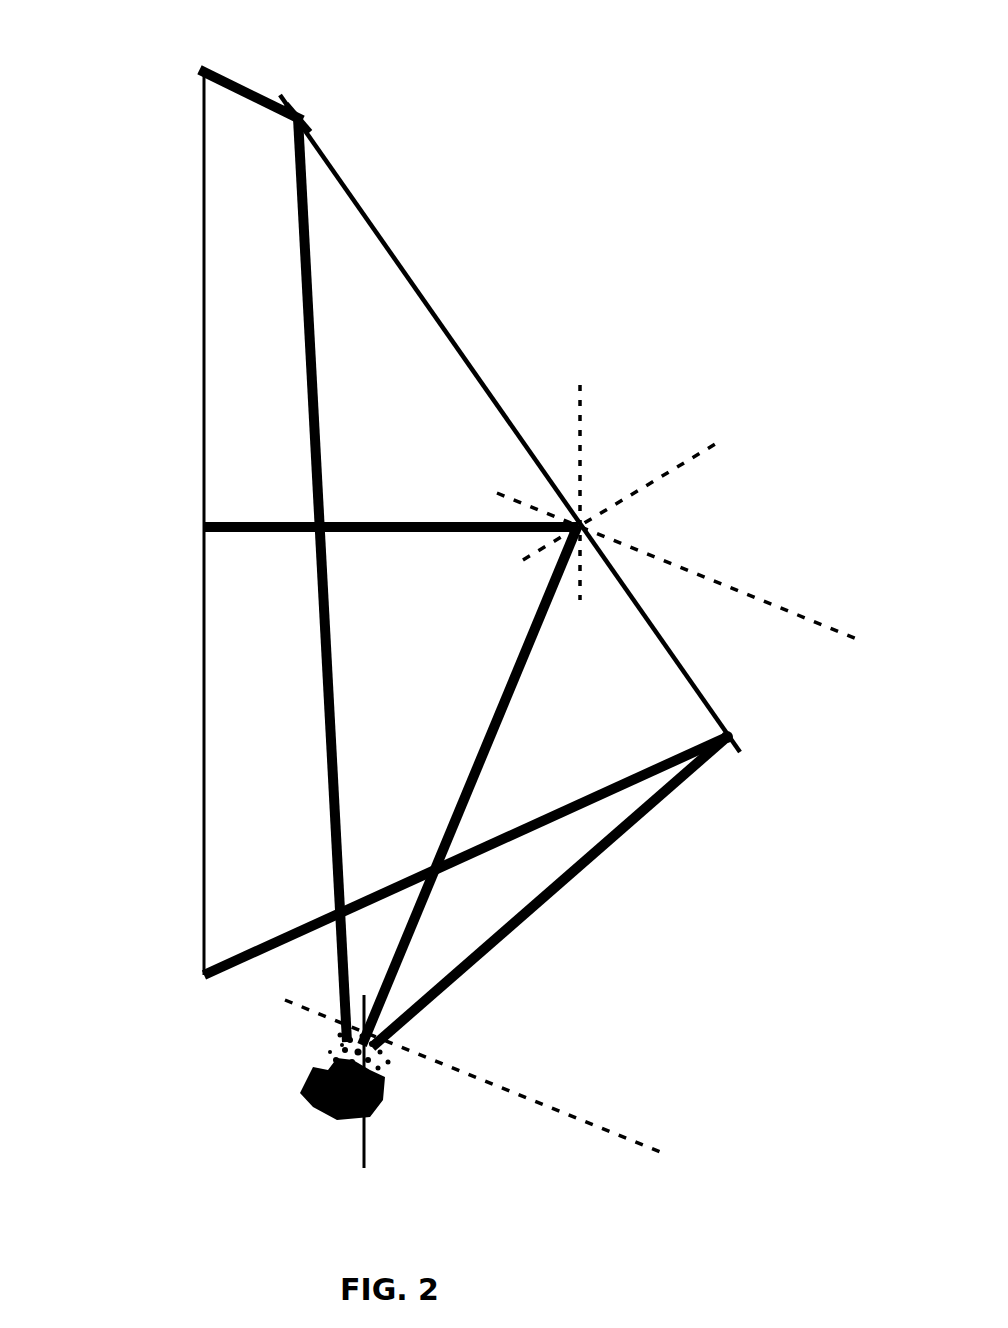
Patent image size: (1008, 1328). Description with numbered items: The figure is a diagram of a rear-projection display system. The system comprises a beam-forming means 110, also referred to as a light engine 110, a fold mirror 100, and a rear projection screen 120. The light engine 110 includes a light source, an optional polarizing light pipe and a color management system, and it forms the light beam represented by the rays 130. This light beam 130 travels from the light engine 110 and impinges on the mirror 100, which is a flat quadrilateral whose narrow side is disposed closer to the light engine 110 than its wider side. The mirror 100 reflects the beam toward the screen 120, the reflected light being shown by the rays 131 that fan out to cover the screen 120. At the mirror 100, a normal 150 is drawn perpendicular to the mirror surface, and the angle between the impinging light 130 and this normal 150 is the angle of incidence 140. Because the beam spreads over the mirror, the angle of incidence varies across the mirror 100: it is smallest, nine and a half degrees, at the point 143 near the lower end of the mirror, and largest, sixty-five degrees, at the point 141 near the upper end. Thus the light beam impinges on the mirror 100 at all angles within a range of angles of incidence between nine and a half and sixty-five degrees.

The fold mirror 100 is at (417, 283).
The beam-forming means (light engine) 110 is at (380, 1117).
The rear projection screen 120 is at (203, 303).
The light beam (rays) 130 is at (492, 715).
The reflected rays 131 is at (235, 86).
The angle of incidence 140 is at (542, 592).
The mirror point of maximum angle of incidence 141 is at (297, 114).
The mirror point of minimum angle of incidence 143 is at (730, 732).
The normal to the mirror 150 is at (683, 463).